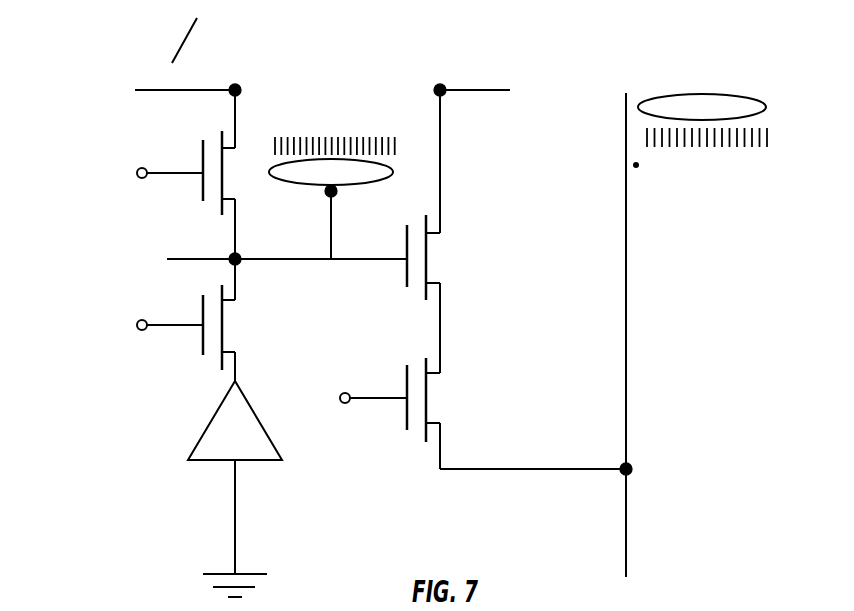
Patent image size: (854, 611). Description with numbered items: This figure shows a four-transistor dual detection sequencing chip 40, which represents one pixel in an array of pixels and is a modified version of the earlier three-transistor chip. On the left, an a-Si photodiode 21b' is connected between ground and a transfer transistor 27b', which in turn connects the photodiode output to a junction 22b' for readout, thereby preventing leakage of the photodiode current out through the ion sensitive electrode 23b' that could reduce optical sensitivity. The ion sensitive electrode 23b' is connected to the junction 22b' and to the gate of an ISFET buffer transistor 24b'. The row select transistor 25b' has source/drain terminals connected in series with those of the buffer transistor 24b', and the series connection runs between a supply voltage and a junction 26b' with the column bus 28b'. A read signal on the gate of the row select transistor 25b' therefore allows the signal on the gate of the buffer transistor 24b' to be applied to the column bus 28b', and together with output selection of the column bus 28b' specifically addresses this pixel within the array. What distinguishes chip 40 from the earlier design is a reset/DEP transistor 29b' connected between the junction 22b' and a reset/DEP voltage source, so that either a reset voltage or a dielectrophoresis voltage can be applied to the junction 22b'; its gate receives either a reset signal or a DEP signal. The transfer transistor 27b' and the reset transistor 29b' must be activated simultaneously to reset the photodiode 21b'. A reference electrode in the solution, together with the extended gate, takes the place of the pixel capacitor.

The four-transistor dual detection sequencing chip 40 is at (558, 67).
The photodiode 21b' is at (167, 489).
The junction 22b' is at (287, 236).
The ion sensitive electrode 23b' is at (354, 141).
The buffer transistor 24b' is at (463, 269).
The row select transistor 25b' is at (440, 413).
The junction 26b' is at (560, 448).
The transfer transistor 27b' is at (145, 320).
The column bus 28b' is at (628, 348).
The reset/DEP transistor 29b' is at (131, 195).